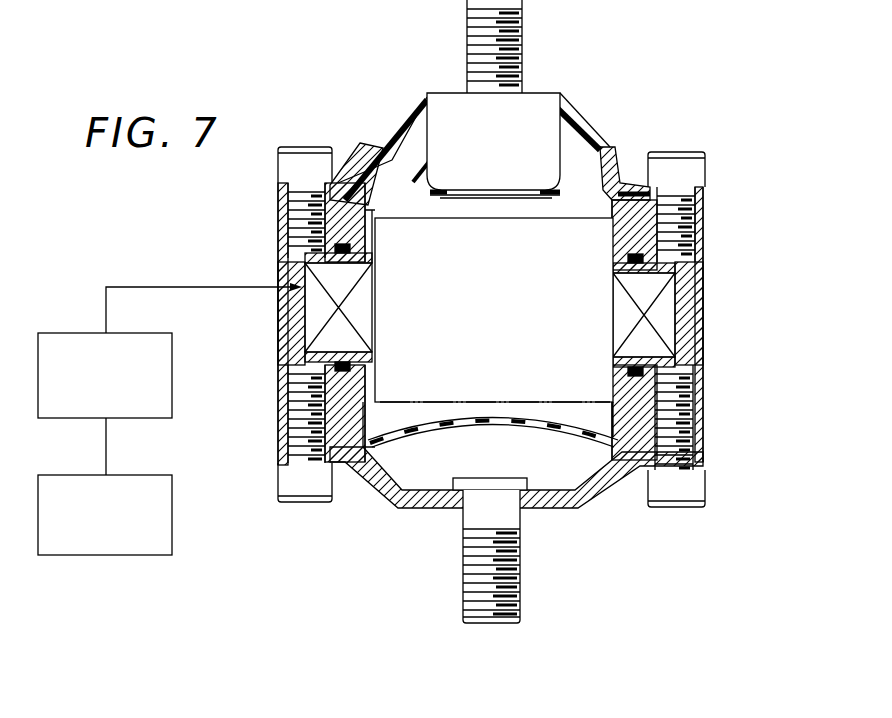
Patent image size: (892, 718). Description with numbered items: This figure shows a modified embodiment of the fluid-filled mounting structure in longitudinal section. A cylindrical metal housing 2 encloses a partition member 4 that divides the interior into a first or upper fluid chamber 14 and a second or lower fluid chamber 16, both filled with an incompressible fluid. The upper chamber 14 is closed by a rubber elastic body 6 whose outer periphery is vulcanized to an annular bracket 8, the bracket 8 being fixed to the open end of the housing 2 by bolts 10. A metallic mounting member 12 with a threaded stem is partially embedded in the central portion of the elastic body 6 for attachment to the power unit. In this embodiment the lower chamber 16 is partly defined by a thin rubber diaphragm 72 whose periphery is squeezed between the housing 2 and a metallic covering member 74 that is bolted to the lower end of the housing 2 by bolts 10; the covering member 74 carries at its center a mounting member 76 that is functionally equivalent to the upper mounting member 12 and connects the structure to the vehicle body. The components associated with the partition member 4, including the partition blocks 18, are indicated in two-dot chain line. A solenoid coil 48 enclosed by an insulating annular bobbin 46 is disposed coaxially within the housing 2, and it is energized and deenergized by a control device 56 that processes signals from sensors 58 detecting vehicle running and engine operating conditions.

The metal housing 2 is at (268, 381).
The partition member 4 is at (410, 202).
The elastic body 6 is at (577, 133).
The annular bracket 8 is at (342, 180).
The bolts 10 is at (675, 158).
The mounting member 12 is at (455, 100).
The first fluid chamber 14 is at (540, 212).
The second fluid chamber 16 is at (412, 410).
The partition block 18 is at (330, 220).
The annular bobbin 46 is at (318, 352).
The solenoid coil 48 is at (317, 307).
The control device 56 is at (58, 336).
The sensors 58 is at (74, 548).
The diaphragm 72 is at (452, 434).
The covering member 74 is at (605, 482).
The mounting member 76 is at (470, 578).